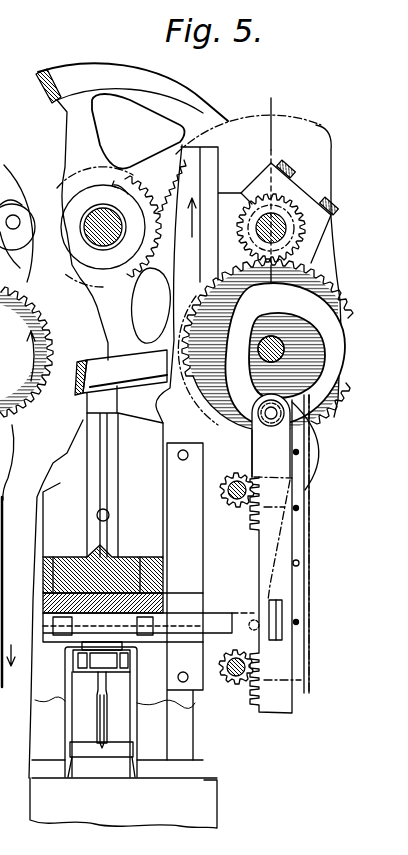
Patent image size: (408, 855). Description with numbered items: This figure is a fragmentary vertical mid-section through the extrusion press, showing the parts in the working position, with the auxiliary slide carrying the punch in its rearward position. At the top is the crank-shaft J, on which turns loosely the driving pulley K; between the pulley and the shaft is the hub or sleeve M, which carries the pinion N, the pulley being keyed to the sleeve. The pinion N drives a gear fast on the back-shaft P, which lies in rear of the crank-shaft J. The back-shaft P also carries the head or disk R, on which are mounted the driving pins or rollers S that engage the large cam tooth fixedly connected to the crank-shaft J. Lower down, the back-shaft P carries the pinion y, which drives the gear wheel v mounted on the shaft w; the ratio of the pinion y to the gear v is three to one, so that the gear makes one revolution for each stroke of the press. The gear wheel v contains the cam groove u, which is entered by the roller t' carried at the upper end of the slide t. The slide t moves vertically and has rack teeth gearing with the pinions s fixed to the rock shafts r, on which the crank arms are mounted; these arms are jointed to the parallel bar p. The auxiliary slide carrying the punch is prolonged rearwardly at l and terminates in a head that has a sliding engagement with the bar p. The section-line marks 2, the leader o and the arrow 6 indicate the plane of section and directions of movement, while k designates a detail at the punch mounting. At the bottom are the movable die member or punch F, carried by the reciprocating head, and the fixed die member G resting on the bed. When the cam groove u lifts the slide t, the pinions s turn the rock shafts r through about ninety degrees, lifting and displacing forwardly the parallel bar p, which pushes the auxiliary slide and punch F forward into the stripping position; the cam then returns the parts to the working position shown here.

The driving pulley K is at (115, 420).
The hub or sleeve M is at (100, 193).
The crank-shaft J is at (111, 228).
The pinion N is at (150, 290).
The head or disk R is at (11, 190).
The driving pins or rollers S is at (14, 242).
The parallel bar p is at (2, 560).
The gear wheel v is at (47, 334).
The section line 2 is at (269, 278).
The upright bar o is at (317, 127).
The back-shaft P is at (296, 183).
The pinion y is at (296, 230).
The cam groove u is at (266, 345).
The shaft w is at (276, 358).
The roller t' is at (285, 437).
The slide t is at (279, 554).
The pinions s is at (231, 507).
The rock shafts r is at (231, 484).
The rearward prolongation of slide l is at (217, 617).
The direction arrow 6 is at (15, 655).
The movable die member F is at (98, 698).
The punch k is at (110, 663).
The fixed die member G is at (112, 752).